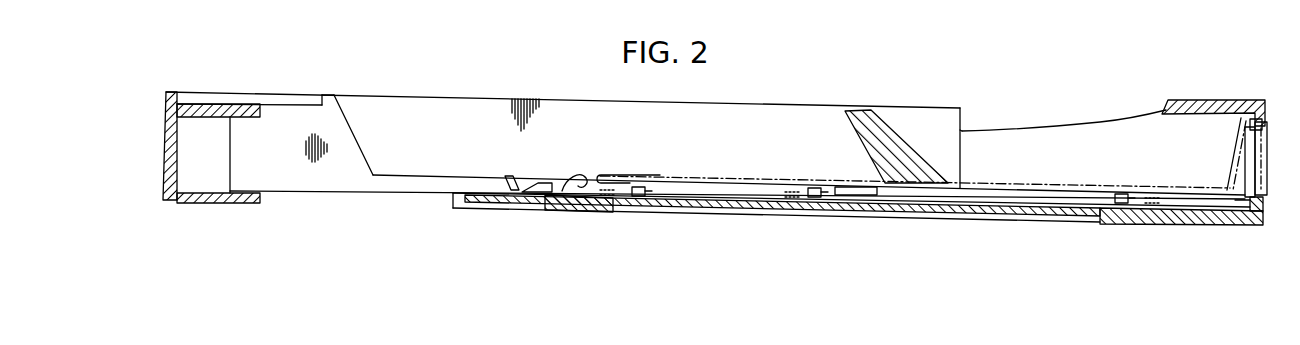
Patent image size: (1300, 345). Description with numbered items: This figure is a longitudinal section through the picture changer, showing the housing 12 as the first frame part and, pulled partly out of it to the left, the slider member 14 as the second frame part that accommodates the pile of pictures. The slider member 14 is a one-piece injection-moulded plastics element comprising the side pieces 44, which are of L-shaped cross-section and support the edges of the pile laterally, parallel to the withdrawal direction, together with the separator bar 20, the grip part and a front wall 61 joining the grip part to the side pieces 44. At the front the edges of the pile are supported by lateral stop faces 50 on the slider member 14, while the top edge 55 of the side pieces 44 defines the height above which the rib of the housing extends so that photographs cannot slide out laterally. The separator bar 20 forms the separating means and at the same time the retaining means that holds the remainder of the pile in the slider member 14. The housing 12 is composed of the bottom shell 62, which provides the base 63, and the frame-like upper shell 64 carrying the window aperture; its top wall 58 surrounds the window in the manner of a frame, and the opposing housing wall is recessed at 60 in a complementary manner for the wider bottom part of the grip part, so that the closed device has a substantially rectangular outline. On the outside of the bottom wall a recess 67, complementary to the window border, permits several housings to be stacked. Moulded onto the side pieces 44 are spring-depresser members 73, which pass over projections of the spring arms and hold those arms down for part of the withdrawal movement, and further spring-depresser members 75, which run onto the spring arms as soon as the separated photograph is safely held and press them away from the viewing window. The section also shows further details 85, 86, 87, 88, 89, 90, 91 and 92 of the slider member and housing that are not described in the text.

The housing 12 is at (1212, 97).
The slider member 14 is at (312, 196).
The separator bar 20 is at (857, 112).
The side pieces 44 is at (394, 107).
The lateral stop faces 50 is at (338, 99).
The top edge 55 is at (491, 95).
The top wall 58 is at (1240, 100).
The recess 60 is at (500, 208).
The front wall 61 is at (166, 172).
The bottom shell 62 is at (1198, 225).
The base 63 is at (825, 221).
The upper shell 64 is at (1165, 108).
The recess 67 is at (696, 214).
The spring-depresser members 73 is at (870, 196).
The spring-depresser members 75 is at (510, 185).
The plate 85 is at (745, 195).
The clip 86 is at (640, 186).
The end wall 87 is at (1270, 188).
The latch block 88 is at (1270, 122).
The contact 89 is at (617, 180).
The axis line 90 is at (922, 168).
The spring 91 is at (568, 175).
The inclined wall 92 is at (365, 147).